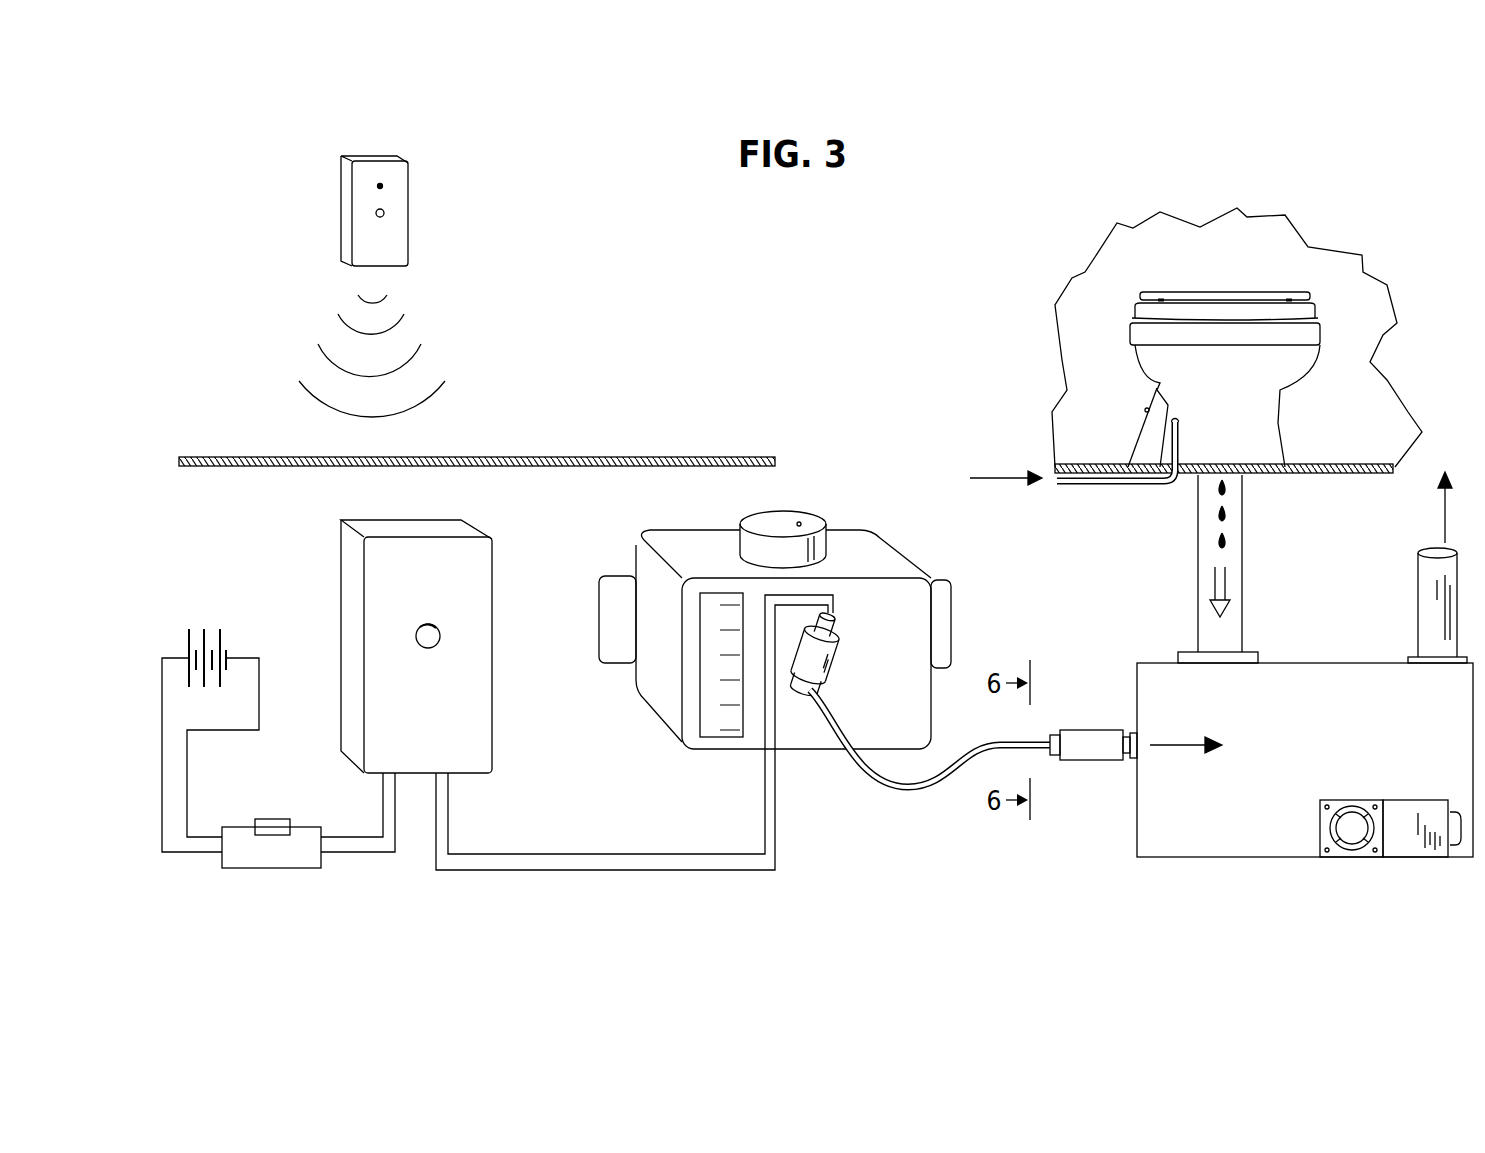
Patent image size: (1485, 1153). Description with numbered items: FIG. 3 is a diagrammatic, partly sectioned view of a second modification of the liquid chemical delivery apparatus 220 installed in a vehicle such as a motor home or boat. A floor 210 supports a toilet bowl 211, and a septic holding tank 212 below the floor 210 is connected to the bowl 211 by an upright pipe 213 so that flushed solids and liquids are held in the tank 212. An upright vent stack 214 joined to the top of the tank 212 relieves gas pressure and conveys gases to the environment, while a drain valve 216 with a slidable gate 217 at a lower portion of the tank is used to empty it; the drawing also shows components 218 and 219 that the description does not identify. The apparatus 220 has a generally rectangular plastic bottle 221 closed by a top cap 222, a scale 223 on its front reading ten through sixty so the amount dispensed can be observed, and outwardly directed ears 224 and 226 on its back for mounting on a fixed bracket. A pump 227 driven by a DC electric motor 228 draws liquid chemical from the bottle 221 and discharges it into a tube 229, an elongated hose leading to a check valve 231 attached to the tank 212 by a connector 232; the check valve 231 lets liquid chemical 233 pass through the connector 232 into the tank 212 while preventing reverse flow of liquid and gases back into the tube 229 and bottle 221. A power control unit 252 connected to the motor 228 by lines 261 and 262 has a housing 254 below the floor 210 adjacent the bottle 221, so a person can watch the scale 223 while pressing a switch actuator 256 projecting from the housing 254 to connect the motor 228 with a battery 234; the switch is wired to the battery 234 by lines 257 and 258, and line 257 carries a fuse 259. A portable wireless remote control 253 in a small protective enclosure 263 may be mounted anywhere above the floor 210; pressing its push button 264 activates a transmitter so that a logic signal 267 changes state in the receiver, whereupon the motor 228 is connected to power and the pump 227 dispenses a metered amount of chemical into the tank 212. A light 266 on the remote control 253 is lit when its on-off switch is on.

The floor 210 is at (632, 456).
The toilet bowl 211 is at (1264, 337).
The septic holding tank 212 is at (1192, 840).
The upright pipe 213 is at (1243, 542).
The vent stack 214 is at (1428, 608).
The drain valve 216 is at (1396, 840).
The slidable gate 217 is at (1457, 847).
The fan 218 is at (1352, 845).
The sensor tube 219 is at (1112, 487).
The liquid chemical delivery apparatus 220 is at (797, 612).
The bottle 221 is at (704, 551).
The top cap 222 is at (783, 536).
The scale 223 is at (700, 734).
The ear 224 is at (621, 649).
The ear 226 is at (944, 614).
The pump 227 is at (802, 692).
The DC electric motor 228 is at (831, 637).
The tube 229 is at (909, 791).
The check valve 231 is at (1091, 730).
The connector 232 is at (1131, 762).
The liquid chemical 233 is at (1175, 745).
The battery 234 is at (201, 627).
The power control unit 252 is at (425, 628).
The wireless remote control 253 is at (378, 204).
The housing 254 is at (389, 570).
The switch actuator 256 is at (444, 636).
The line 257 is at (224, 734).
The line 258 is at (278, 870).
The fuse 259 is at (273, 819).
The line 261 is at (494, 852).
The line 262 is at (600, 872).
The protective enclosure 263 is at (369, 242).
The push button 264 is at (387, 213).
The light 266 is at (375, 186).
The logic signal 267 is at (419, 356).